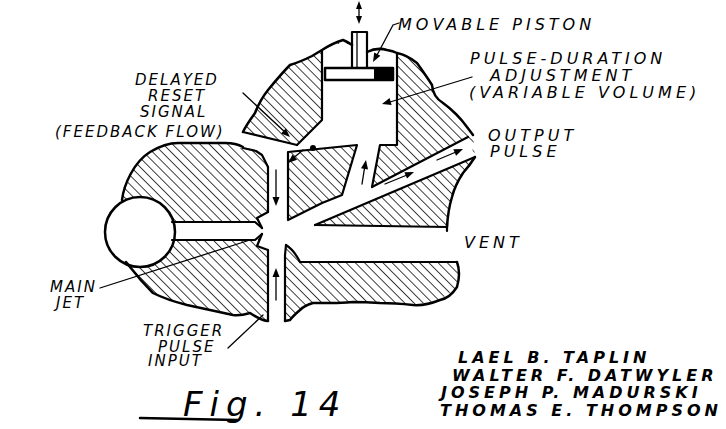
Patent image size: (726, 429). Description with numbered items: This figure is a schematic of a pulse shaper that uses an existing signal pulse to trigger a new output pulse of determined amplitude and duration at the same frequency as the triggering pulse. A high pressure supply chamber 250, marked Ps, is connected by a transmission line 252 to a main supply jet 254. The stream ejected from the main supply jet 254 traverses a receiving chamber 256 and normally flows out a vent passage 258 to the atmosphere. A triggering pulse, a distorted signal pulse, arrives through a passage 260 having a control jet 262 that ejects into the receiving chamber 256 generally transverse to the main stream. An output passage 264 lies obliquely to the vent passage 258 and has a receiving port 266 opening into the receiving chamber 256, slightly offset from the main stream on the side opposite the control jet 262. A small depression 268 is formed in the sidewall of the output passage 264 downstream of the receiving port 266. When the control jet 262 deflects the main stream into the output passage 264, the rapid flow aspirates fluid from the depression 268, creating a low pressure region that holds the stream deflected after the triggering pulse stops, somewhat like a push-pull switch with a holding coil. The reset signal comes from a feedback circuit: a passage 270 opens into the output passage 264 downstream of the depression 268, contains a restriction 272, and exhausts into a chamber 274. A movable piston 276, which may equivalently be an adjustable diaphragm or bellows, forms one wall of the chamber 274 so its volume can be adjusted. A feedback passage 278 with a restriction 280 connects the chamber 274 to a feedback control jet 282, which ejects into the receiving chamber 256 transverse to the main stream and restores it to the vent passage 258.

The high pressure supply chamber 250 is at (114, 205).
The transmission line 252 is at (216, 212).
The main supply jet 254 is at (256, 231).
The receiving chamber 256 is at (282, 231).
The vent passage 258 is at (424, 252).
The passage 260 is at (289, 319).
The control jet 262 is at (291, 255).
The output passage 264 is at (468, 166).
The receiving port 266 is at (317, 228).
The depression 268 is at (322, 182).
The passage 270 is at (420, 96).
The restriction 272 is at (377, 156).
The chamber 274 is at (364, 105).
The movable piston 276 is at (342, 70).
The feedback passage 278 is at (270, 130).
The restriction 280 is at (314, 147).
The feedback control jet 282 is at (257, 189).